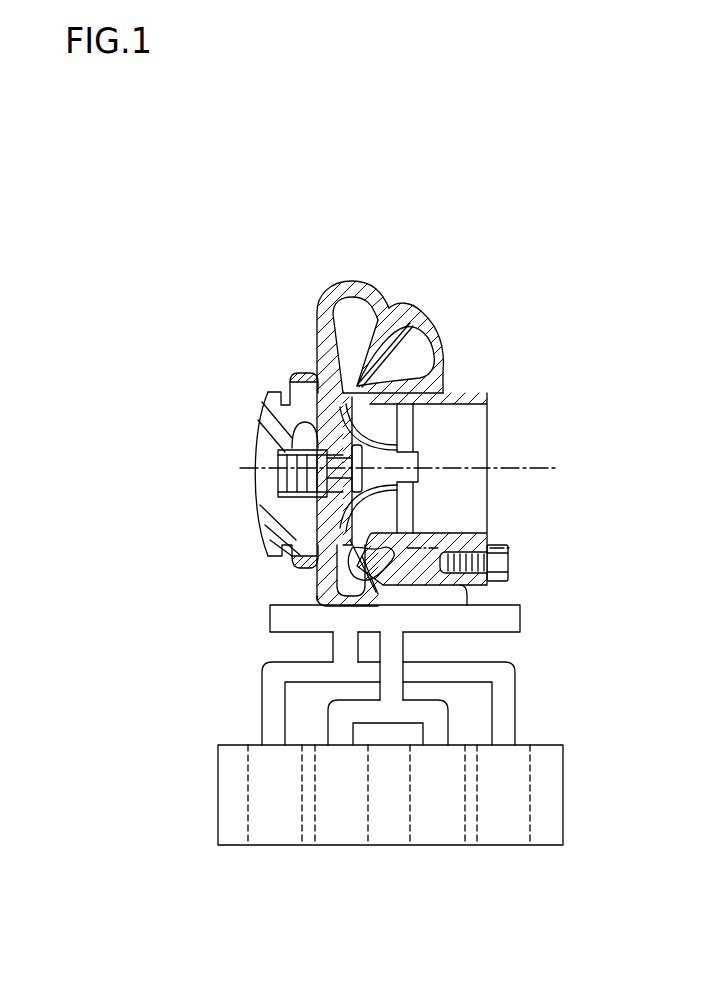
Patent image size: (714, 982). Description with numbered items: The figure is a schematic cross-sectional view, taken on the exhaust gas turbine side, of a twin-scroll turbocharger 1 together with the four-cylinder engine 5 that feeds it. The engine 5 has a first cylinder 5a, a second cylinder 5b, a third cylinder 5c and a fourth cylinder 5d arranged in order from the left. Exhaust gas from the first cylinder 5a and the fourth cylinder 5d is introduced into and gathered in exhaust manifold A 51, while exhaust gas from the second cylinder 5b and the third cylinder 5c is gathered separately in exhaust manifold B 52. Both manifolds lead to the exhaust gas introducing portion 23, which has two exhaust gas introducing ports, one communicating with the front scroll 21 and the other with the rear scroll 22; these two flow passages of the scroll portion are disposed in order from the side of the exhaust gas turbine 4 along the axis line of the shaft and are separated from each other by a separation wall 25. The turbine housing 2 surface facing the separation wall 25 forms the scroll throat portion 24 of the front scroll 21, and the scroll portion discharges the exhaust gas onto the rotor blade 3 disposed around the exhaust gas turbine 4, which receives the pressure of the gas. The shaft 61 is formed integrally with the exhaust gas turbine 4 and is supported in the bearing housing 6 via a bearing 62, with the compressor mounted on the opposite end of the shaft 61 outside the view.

The twin-scroll turbocharger 1 is at (394, 226).
The turbine housing 2 is at (442, 350).
The rotor blade 3 is at (380, 420).
The exhaust gas turbine 4 is at (417, 476).
The four-cylinder engine 5 is at (395, 845).
The first cylinder 5a is at (280, 820).
The second cylinder 5b is at (346, 820).
The third cylinder 5c is at (441, 820).
The fourth cylinder 5d is at (507, 820).
The bearing housing 6 is at (268, 404).
The front scroll 21 is at (407, 340).
The rear scroll 22 is at (347, 318).
The exhaust gas introducing portion 23 is at (467, 632).
The scroll throat portion 24 is at (441, 350).
The separation wall 25 is at (365, 348).
The exhaust manifold A 51 is at (507, 717).
The exhaust manifold B 52 is at (440, 718).
The shaft 61 is at (262, 484).
The bearing 62 is at (300, 473).